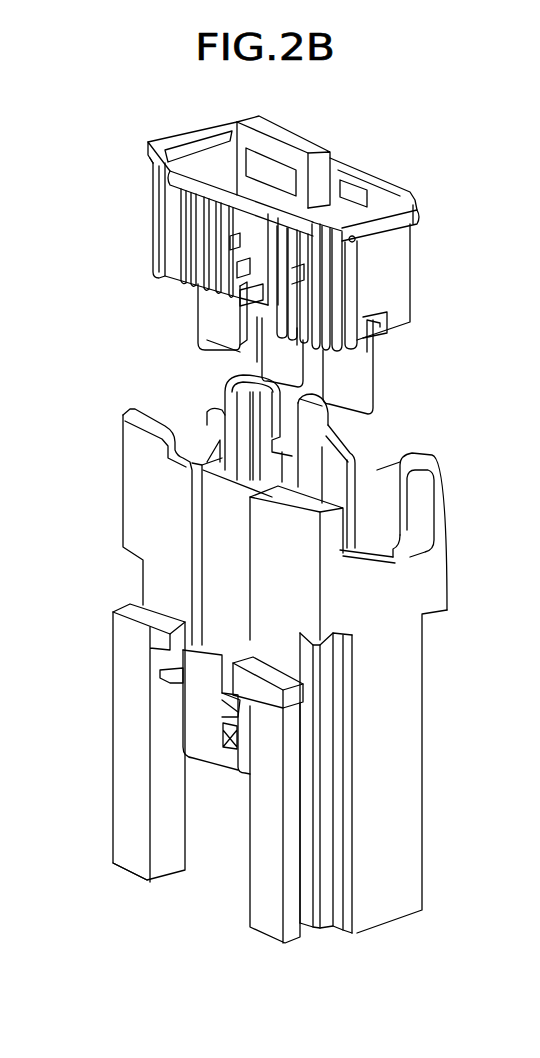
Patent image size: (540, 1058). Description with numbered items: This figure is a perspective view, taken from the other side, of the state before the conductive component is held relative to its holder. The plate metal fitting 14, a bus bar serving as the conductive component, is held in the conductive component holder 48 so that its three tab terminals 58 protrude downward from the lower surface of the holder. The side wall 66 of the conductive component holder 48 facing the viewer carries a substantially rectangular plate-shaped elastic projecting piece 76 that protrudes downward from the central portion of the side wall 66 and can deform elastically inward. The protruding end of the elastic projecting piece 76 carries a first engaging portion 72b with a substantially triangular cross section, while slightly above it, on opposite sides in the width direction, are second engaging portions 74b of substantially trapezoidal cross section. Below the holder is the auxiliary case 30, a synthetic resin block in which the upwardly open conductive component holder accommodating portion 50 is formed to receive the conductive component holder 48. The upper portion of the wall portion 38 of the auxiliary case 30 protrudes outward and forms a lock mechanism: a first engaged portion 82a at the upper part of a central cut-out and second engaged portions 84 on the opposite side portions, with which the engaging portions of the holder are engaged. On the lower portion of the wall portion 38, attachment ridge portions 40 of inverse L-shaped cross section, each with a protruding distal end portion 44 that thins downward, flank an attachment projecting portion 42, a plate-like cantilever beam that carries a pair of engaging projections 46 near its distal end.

The plate metal fitting 14 is at (390, 374).
The auxiliary case 30 is at (390, 728).
The wall portion 38 is at (167, 587).
The attachment ridge portion 40 is at (135, 735).
The attachment projecting portion 42 is at (197, 727).
The protruding distal end portion 44 is at (115, 762).
The engaging projection 46 is at (222, 697).
The conductive component holder 48 is at (386, 133).
The conductive component holder accommodating portion 50 is at (373, 522).
The tab terminal 58 is at (215, 322).
The side wall 66 is at (236, 232).
The first engaging portion 72b is at (245, 298).
The second engaging portion 74b is at (240, 268).
The elastic projecting piece 76 is at (232, 243).
The first engaged portion 82a is at (345, 428).
The second engaged portion 84 is at (278, 468).